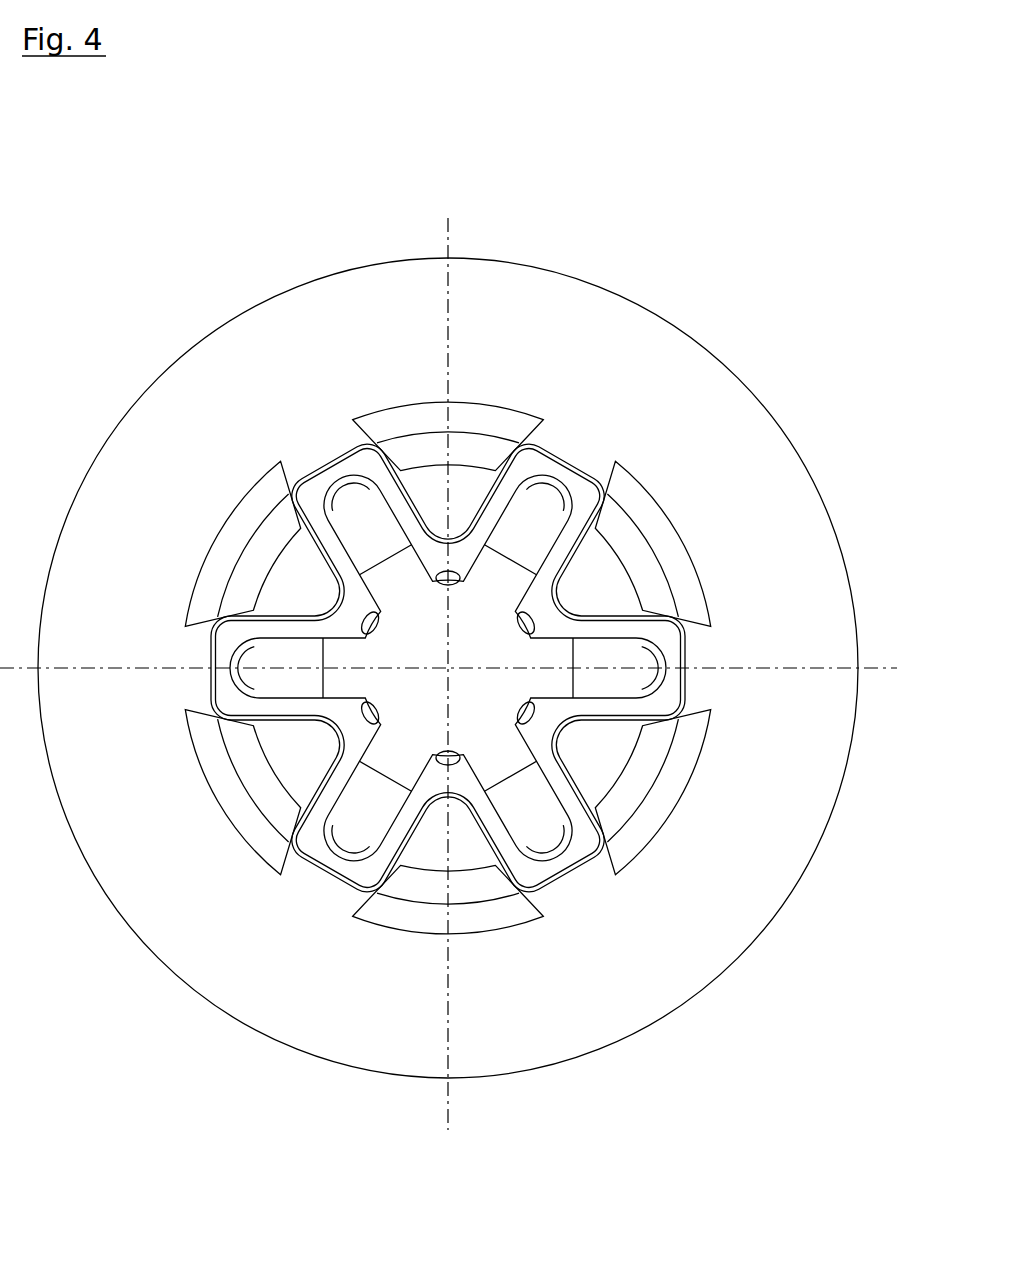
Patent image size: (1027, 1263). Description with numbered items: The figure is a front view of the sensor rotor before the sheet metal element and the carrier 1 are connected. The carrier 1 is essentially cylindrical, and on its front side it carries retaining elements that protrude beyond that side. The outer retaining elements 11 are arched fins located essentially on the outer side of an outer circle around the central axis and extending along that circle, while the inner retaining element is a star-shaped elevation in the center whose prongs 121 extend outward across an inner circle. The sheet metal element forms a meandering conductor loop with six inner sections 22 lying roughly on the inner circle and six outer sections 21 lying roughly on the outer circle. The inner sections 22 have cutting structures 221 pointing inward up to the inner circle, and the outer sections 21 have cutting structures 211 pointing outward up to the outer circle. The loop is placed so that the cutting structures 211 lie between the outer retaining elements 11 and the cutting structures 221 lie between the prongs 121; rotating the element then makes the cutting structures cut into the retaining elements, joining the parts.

The carrier 1 is at (530, 345).
The outer retaining element 11 is at (470, 413).
The prongs 121 is at (405, 580).
The outer sections 21 is at (570, 480).
The cutting structures 211 is at (555, 453).
The inner sections 22 is at (472, 522).
The cutting structures 221 is at (447, 570).